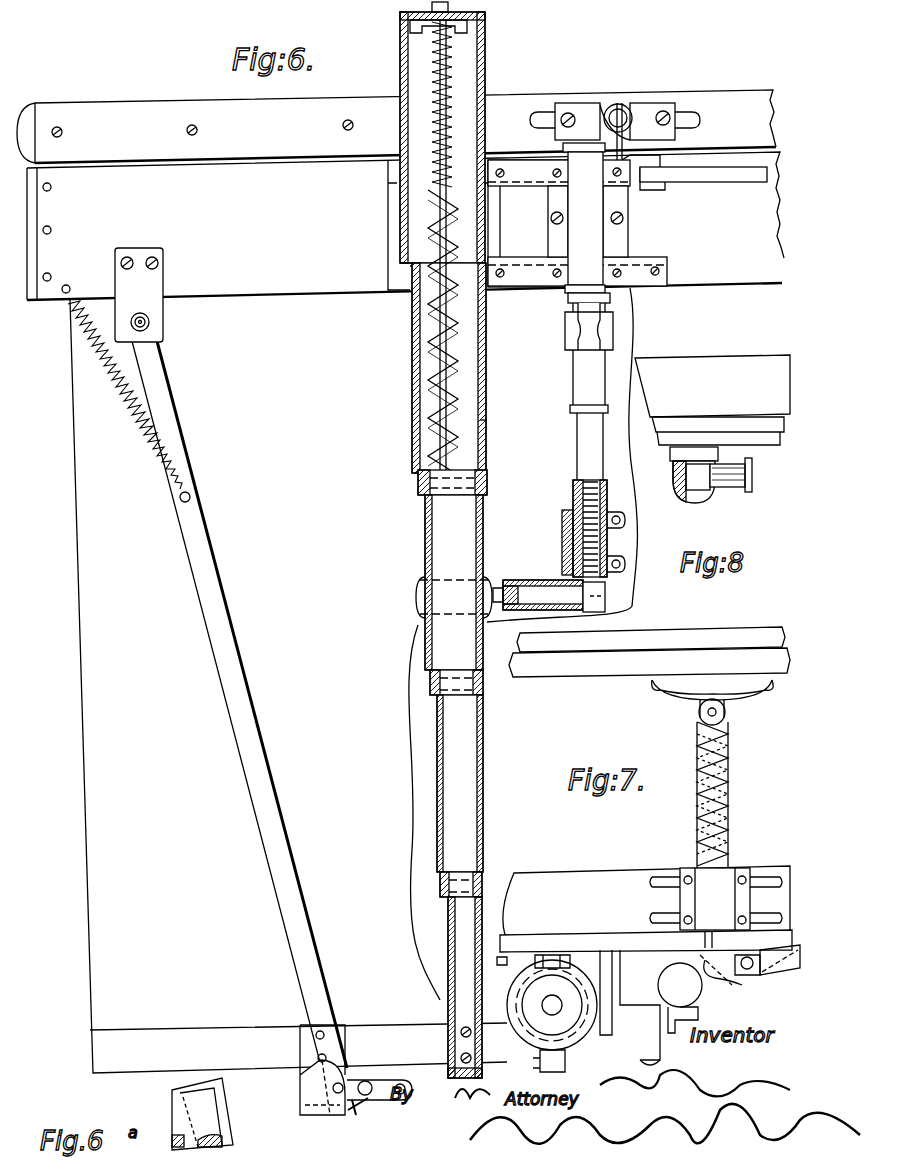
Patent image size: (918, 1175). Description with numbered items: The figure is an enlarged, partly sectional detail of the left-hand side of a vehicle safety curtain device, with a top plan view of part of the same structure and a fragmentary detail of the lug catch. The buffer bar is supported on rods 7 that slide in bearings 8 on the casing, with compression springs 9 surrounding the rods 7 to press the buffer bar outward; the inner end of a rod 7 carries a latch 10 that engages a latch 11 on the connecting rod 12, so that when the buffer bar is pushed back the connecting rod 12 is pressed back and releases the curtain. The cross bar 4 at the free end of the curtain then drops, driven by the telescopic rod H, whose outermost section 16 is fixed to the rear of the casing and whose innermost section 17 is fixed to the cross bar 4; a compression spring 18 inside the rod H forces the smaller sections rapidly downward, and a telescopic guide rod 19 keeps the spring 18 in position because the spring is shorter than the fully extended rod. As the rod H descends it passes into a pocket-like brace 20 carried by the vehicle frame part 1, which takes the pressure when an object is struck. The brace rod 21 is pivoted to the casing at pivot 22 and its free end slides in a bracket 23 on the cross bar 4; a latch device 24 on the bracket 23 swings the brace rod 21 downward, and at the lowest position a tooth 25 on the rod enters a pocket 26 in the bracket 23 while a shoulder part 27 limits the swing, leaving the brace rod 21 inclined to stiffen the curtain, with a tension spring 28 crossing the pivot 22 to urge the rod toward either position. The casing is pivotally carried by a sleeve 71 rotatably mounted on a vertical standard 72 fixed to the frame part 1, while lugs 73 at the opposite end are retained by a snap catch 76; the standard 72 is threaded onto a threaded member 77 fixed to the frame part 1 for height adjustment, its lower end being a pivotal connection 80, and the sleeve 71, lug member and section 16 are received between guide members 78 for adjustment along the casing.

In FIG. 6, the under frame part 1 is at (547, 582).
In FIG. 7, the under frame part 1 is at (668, 1054).
In FIG. 6, the cross bar 4 is at (193, 1042).
In FIG. 7, the rod 7 is at (730, 775).
In FIG. 7, the bearing 8 is at (710, 897).
In FIG. 7, the compression spring 9 is at (700, 778).
In FIG. 6, the latch 10 is at (604, 118).
In FIG. 7, the latch 10 is at (727, 965).
In FIG. 6, the latch 11 is at (630, 172).
In FIG. 7, the latch 11 is at (740, 968).
In FIG. 6, the connecting rod 12 is at (735, 182).
In FIG. 7, the connecting rod 12 is at (788, 962).
In FIG. 6, the outermost section 16 is at (486, 82).
In FIG. 6, the innermost section 17 is at (450, 1000).
In FIG. 6, the compression spring 18 is at (462, 76).
In FIG. 6, the telescopic guide rod 19 is at (435, 70).
In FIG. 6, the pocket-like brace 20 is at (420, 592).
In FIG. 7, the pocket-like brace 20 is at (520, 1022).
In FIG. 6, the brace rod 21 is at (243, 705).
In FIG. 6, the pivot 22 is at (150, 322).
In FIG. 6, the bracket 23 is at (300, 1098).
In FIG. 6, the latch device 24 is at (368, 1080).
In FIG. 6A, the tooth 25 is at (196, 1133).
In FIG. 6A, the pocket 26 is at (186, 1148).
In FIG. 6, the shoulder part 27 is at (358, 1110).
In FIG. 6, the tension spring 28 is at (122, 396).
In FIG. 6, the sleeve 71 is at (590, 243).
In FIG. 6, the vertical standard 72 is at (585, 363).
In FIG. 8, the lug 73 is at (695, 490).
In FIG. 8, the snap catch 76 is at (752, 473).
In FIG. 6, the threaded member 77 is at (602, 508).
In FIG. 6, the guide member 78 is at (560, 182).
In FIG. 6, the pivotal connection 80 is at (606, 602).
In FIG. 6, the telescopic rod H is at (487, 428).